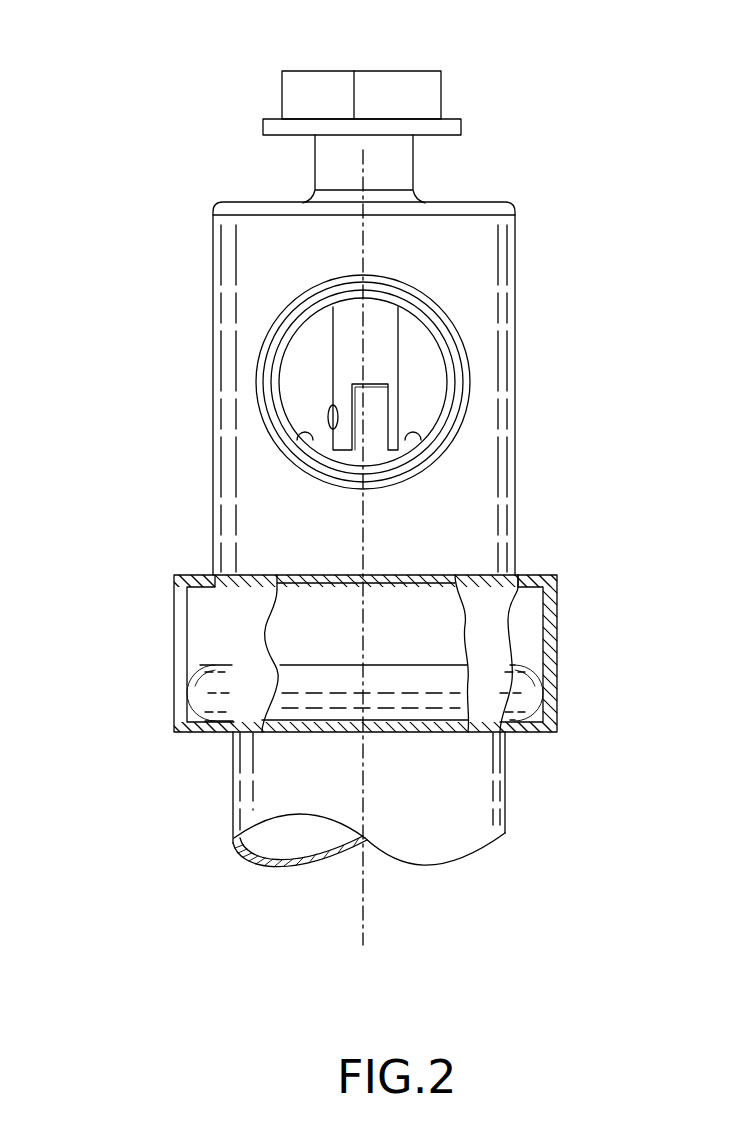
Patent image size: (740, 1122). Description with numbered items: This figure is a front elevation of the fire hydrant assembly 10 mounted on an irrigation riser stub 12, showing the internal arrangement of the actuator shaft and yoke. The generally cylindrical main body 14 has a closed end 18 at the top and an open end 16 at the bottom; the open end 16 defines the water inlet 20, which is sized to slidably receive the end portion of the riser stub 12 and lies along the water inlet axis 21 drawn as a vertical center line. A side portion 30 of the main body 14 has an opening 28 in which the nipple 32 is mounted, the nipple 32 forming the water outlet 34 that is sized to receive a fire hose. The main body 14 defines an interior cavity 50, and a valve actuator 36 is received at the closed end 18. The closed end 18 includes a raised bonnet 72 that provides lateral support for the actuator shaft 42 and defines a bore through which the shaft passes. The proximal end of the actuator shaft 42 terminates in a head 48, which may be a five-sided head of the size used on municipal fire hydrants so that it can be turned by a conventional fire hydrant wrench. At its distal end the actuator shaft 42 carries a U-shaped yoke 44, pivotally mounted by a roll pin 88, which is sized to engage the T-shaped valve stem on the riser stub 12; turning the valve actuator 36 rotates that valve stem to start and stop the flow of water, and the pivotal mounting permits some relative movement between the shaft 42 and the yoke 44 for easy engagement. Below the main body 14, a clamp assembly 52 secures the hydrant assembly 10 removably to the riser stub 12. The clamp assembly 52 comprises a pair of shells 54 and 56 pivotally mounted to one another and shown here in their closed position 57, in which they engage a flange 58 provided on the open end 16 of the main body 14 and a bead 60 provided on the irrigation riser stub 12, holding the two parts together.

The fire hydrant assembly 10 is at (114, 150).
The irrigation riser stub 12 is at (281, 888).
The main body 14 is at (321, 361).
The open end 16 is at (545, 617).
The closed end 18 is at (250, 202).
The water inlet 20 is at (373, 662).
The water inlet axis 21 is at (365, 905).
The opening 28 is at (462, 332).
The side portion 30 is at (456, 275).
The nipple 32 is at (482, 386).
The water outlet 34 is at (310, 433).
The valve actuator 36 is at (392, 103).
The actuator shaft 42 is at (297, 378).
The yoke 44 is at (413, 438).
The head 48 is at (445, 97).
The interior cavity 50 is at (397, 406).
The clamp assembly 52 is at (348, 663).
The shell 54 is at (268, 625).
The shell 56 is at (460, 622).
The closed position 57 is at (205, 733).
The flange 58 is at (398, 578).
The bead 60 is at (538, 675).
The raised bonnet 72 is at (415, 176).
The roll pin 88 is at (325, 409).